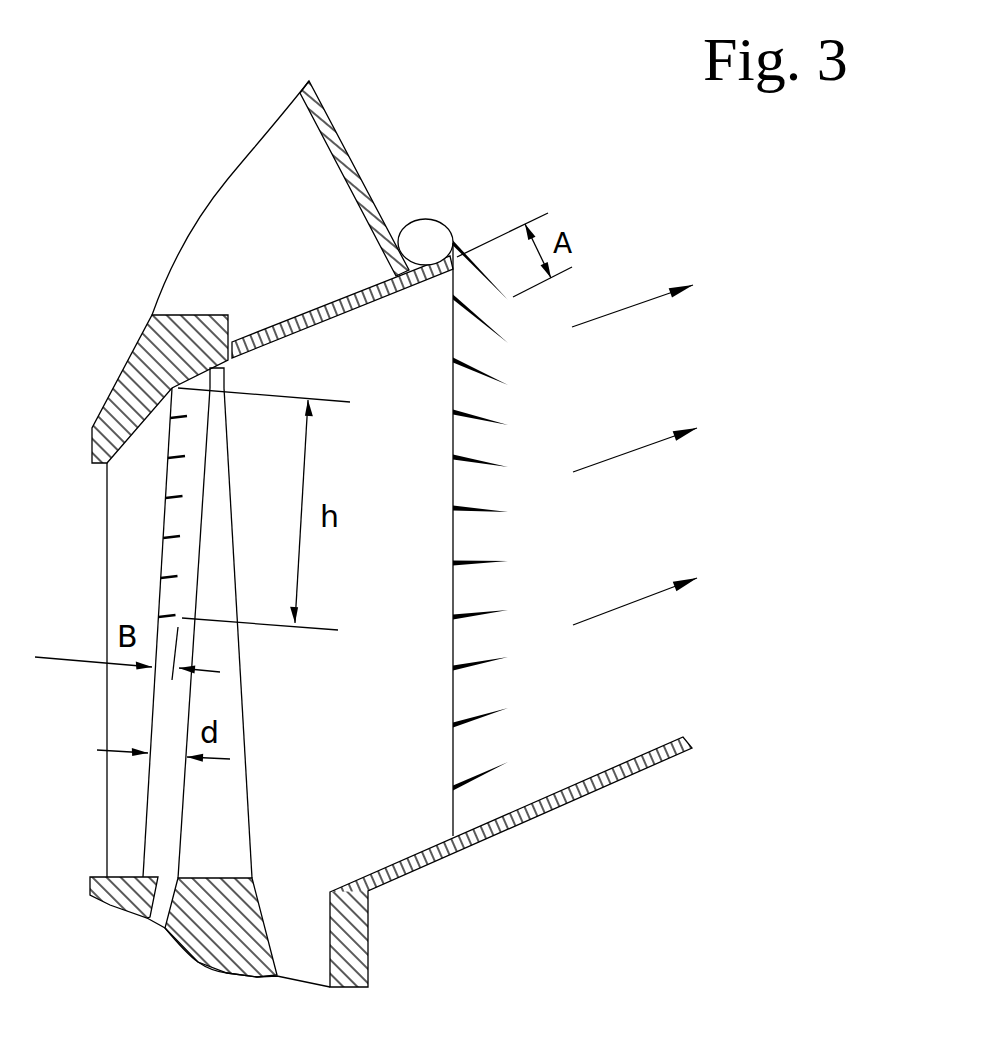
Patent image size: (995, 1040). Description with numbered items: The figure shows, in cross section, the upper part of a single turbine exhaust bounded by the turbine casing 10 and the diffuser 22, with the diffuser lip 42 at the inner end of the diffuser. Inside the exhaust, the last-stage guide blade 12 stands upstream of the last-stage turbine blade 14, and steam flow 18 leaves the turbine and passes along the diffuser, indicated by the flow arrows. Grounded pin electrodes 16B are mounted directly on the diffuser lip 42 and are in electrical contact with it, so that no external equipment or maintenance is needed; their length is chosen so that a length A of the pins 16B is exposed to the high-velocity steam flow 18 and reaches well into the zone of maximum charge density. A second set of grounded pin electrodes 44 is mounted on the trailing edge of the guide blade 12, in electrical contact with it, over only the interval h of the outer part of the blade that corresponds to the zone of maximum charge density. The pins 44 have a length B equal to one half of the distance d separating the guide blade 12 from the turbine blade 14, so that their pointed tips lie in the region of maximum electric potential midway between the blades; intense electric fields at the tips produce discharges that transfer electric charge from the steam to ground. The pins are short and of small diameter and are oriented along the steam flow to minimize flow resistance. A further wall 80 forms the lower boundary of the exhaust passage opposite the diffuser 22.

The turbine casing 10 is at (128, 378).
The L-stage guide blade 12 is at (138, 508).
The L-stage turbine blade 14 is at (208, 843).
The grounded pin electrodes 16B is at (477, 565).
The steam flow 18 is at (622, 452).
The diffuser 22 is at (342, 142).
The diffuser lip 42 is at (433, 220).
The grounded pin electrodes 44 is at (173, 540).
The lower duct wall 80 is at (422, 898).